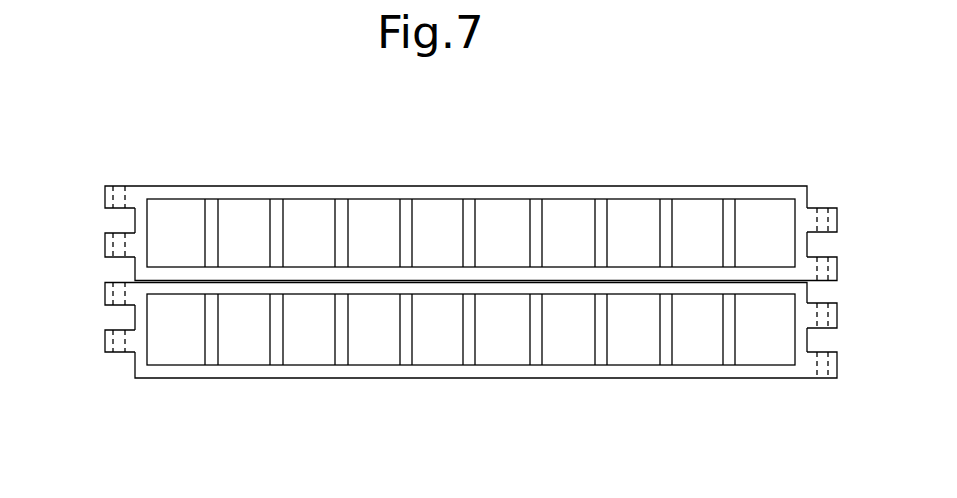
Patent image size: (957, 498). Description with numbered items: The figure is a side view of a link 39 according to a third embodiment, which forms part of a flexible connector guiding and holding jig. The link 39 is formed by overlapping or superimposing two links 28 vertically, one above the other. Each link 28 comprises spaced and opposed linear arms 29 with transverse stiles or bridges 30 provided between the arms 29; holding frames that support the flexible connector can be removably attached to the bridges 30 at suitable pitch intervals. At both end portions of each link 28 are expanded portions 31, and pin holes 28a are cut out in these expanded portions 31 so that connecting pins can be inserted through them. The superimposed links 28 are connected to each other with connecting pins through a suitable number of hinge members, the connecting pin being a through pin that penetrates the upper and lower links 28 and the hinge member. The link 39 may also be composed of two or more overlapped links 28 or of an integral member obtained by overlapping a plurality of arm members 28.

The link 28 is at (403, 222).
The pin hole 28a is at (120, 187).
The linear arm 29 is at (238, 277).
The transverse stile or bridge 30 is at (441, 175).
The expanded portion 31 is at (105, 198).
The link 39 is at (578, 168).